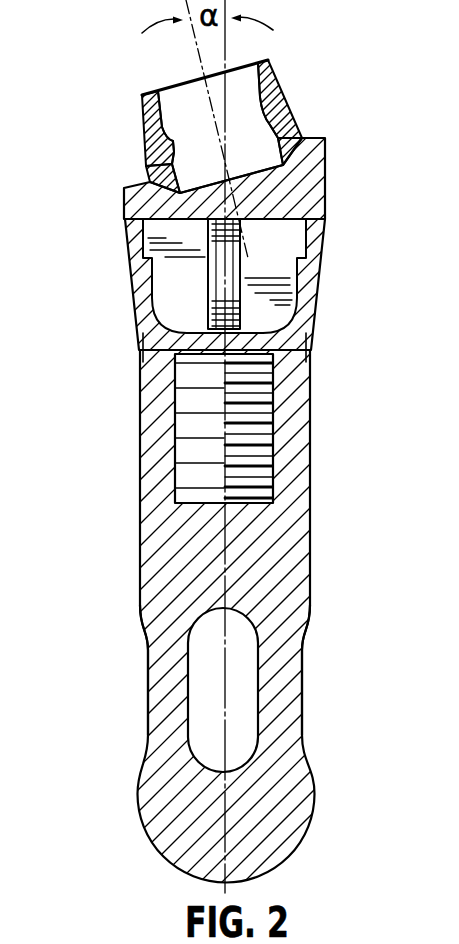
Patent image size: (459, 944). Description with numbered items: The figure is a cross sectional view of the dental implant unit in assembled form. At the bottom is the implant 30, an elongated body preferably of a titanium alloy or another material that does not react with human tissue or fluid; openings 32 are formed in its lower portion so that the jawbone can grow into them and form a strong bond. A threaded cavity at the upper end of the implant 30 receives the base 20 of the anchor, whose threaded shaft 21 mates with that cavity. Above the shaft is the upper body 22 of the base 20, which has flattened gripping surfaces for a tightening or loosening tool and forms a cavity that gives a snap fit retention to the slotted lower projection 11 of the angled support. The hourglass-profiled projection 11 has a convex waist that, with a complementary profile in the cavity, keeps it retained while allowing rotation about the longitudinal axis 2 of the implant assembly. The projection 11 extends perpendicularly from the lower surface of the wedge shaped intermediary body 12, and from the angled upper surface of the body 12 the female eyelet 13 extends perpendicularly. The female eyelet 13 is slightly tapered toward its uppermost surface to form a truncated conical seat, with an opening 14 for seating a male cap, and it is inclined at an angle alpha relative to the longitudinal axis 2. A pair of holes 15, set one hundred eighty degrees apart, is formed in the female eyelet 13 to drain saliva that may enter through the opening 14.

The longitudinal axis 2 is at (227, 552).
The slotted lower projection 11 is at (183, 282).
The wedge shaped intermediary body 12 is at (318, 183).
The angled female eyelet 13 is at (280, 82).
The opening 14 is at (181, 101).
The holes 15 is at (146, 166).
The base 20 is at (341, 258).
The threaded shaft 21 is at (193, 420).
The upper body 22 is at (301, 284).
The implant 30 is at (317, 484).
The openings 32 is at (133, 636).